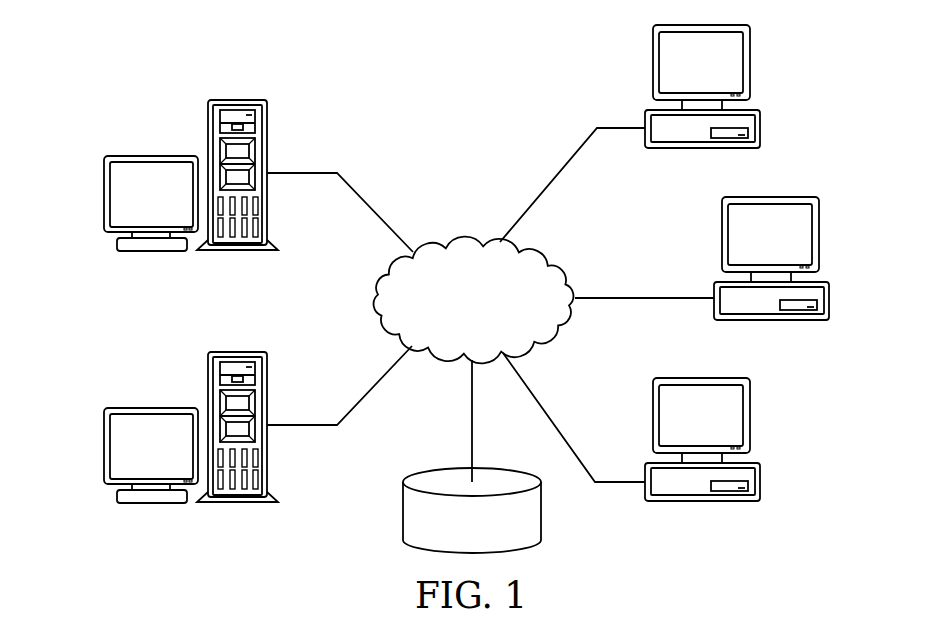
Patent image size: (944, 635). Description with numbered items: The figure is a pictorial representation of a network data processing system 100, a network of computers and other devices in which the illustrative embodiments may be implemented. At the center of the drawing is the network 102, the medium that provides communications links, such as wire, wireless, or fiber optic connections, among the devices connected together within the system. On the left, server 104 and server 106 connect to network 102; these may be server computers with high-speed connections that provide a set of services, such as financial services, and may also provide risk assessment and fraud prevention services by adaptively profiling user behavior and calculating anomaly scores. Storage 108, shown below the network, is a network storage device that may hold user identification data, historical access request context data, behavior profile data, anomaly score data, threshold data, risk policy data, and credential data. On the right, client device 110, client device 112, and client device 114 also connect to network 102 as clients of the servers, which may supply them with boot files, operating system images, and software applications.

The network data processing system 100 is at (338, 84).
The network 102 is at (467, 238).
The server 104 is at (103, 193).
The server 106 is at (103, 445).
The storage 108 is at (403, 508).
The client device 110 is at (760, 117).
The client device 112 is at (828, 310).
The client device 114 is at (758, 495).